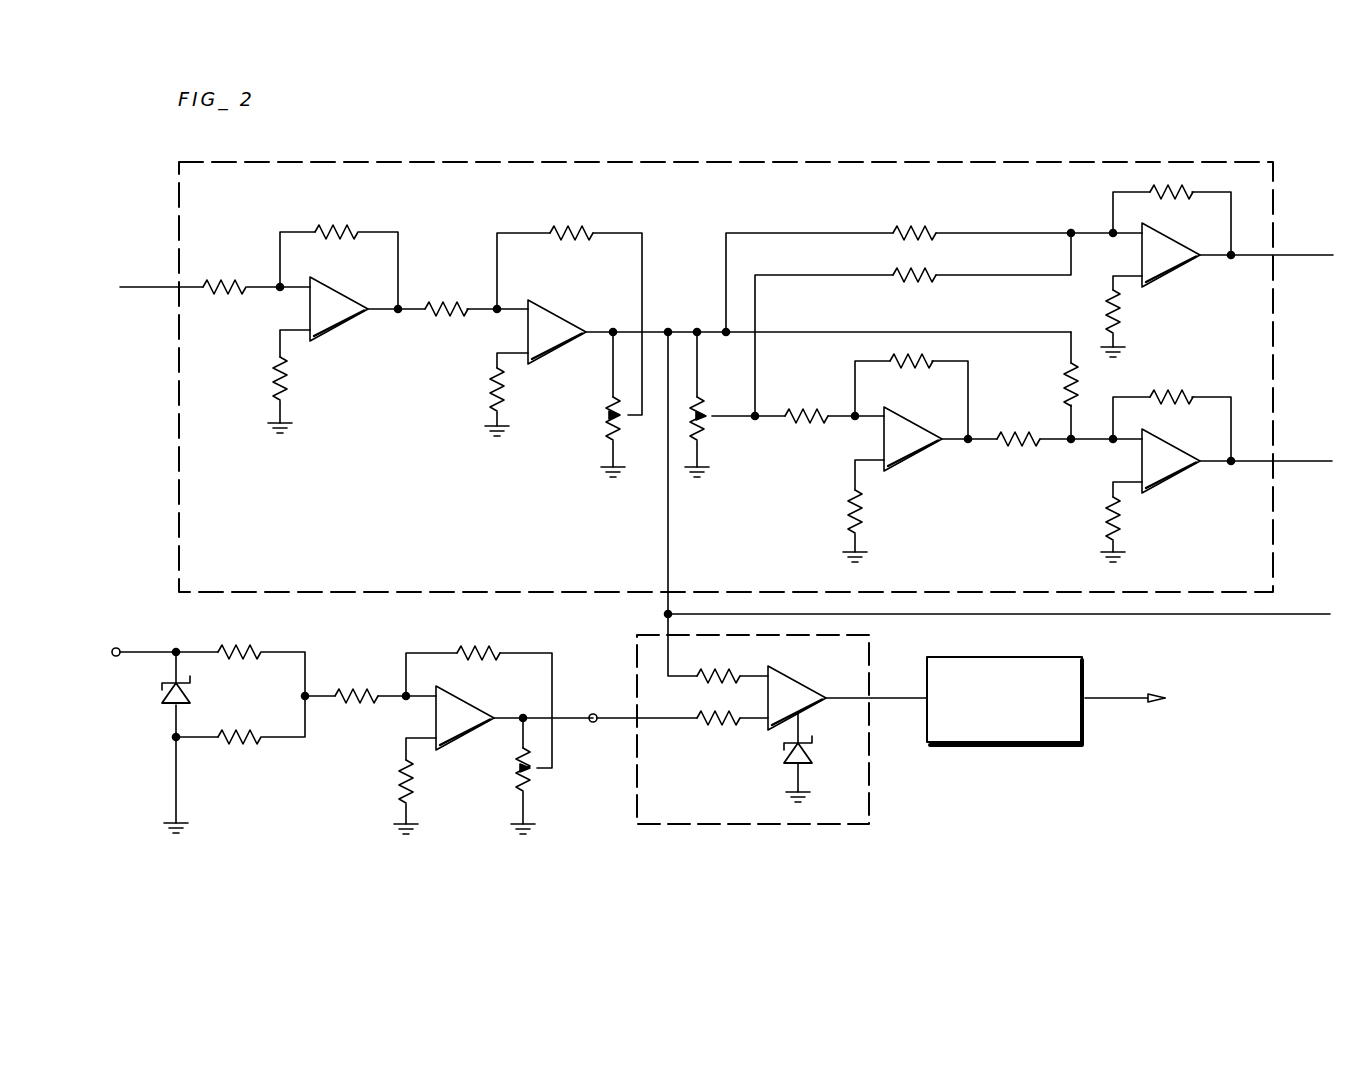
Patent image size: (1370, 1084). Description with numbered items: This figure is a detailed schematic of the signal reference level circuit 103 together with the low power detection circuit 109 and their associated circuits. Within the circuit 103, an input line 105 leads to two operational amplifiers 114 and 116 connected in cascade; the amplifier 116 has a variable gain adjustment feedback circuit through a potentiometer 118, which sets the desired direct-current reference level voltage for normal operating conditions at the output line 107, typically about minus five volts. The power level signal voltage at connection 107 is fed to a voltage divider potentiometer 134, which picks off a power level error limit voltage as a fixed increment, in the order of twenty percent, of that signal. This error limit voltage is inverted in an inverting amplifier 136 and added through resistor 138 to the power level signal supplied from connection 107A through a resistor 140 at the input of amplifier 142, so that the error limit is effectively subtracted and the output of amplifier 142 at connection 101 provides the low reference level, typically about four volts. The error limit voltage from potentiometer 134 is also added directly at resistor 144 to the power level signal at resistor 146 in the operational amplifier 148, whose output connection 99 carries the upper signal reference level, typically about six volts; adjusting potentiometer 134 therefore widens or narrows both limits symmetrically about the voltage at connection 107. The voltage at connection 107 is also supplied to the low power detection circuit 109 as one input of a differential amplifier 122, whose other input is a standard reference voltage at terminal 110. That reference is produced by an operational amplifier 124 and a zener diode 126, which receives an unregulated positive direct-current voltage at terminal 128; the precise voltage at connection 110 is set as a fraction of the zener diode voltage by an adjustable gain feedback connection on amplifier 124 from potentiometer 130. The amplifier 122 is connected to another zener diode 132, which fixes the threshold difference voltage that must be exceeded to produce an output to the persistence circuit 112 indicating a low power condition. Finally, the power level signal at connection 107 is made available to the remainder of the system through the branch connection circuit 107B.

The first output line 99 is at (1308, 255).
The connection 101 is at (1306, 462).
The signal reference level circuit 103 is at (1018, 162).
The input line 105 is at (175, 287).
The output line 107 is at (667, 522).
The connection 107A is at (812, 332).
The branch connection circuit 107B is at (1290, 617).
The low power detection circuit 109 is at (869, 797).
The terminal 110 is at (593, 722).
The persistence circuit 112 is at (1003, 745).
The operational amplifier 114 is at (336, 327).
The operational amplifier 116 is at (561, 316).
The potentiometer 118 is at (607, 424).
The differential amplifier 122 is at (798, 682).
The operational amplifier 124 is at (465, 702).
The zener diode 126 is at (163, 695).
The terminal 128 is at (120, 650).
The potentiometer 130 is at (518, 782).
The zener diode 132 is at (785, 752).
The voltage divider potentiometer 134 is at (715, 421).
The inverting amplifier 136 is at (921, 454).
The resistor 138 is at (1010, 446).
The resistor 140 is at (1064, 378).
The amplifier 142 is at (1175, 475).
The resistor 144 is at (928, 275).
The resistor 146 is at (928, 233).
The operational amplifier 148 is at (1181, 265).